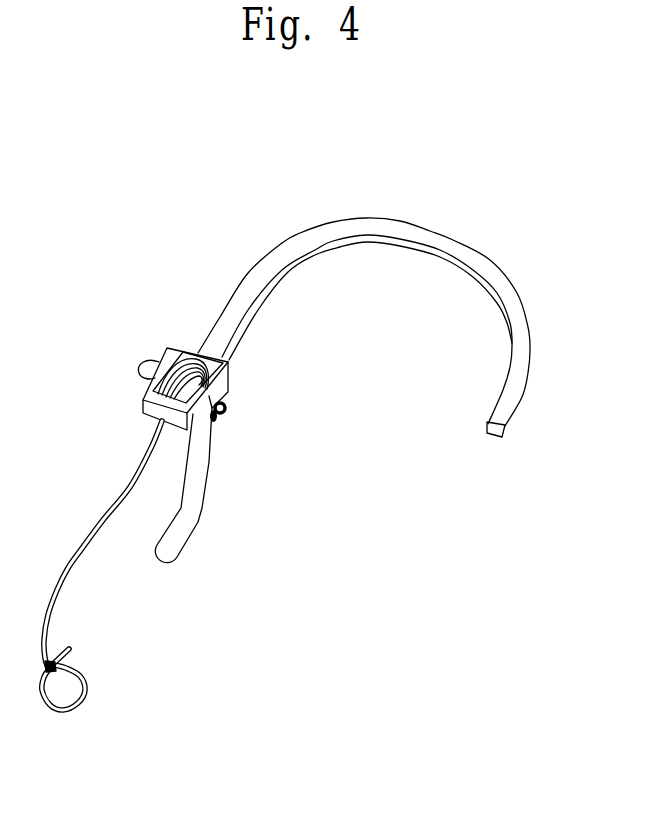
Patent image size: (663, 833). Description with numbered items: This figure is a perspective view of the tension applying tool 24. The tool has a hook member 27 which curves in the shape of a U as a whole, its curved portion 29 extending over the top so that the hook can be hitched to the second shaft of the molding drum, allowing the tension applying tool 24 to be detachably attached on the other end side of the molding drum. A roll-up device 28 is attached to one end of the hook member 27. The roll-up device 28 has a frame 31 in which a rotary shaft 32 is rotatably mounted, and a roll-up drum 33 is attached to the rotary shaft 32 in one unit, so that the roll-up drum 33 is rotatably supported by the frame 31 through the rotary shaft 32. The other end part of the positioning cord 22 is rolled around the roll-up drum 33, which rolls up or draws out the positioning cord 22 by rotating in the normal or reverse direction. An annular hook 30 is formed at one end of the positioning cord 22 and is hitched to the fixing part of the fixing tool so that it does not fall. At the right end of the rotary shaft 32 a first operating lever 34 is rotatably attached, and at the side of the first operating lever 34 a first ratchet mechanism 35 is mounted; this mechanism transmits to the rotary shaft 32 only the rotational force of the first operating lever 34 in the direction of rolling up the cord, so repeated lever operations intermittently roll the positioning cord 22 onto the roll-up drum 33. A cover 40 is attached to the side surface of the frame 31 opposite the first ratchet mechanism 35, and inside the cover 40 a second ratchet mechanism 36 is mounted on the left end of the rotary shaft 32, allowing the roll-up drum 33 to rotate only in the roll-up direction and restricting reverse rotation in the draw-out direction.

The positioning cord 22 is at (87, 545).
The tension applying tool 24 is at (297, 152).
The hook member 27 is at (488, 262).
The roll-up device 28 is at (186, 327).
The curved portion of hook 29 is at (364, 210).
The annular hook 30 is at (85, 693).
The frame 31 is at (236, 364).
The rotary shaft 32 is at (139, 367).
The roll-up drum 33 is at (196, 381).
The first operating lever 34 is at (194, 527).
The first ratchet mechanism 35 is at (217, 432).
The second ratchet mechanism 36 is at (166, 342).
The cover 40 is at (141, 400).